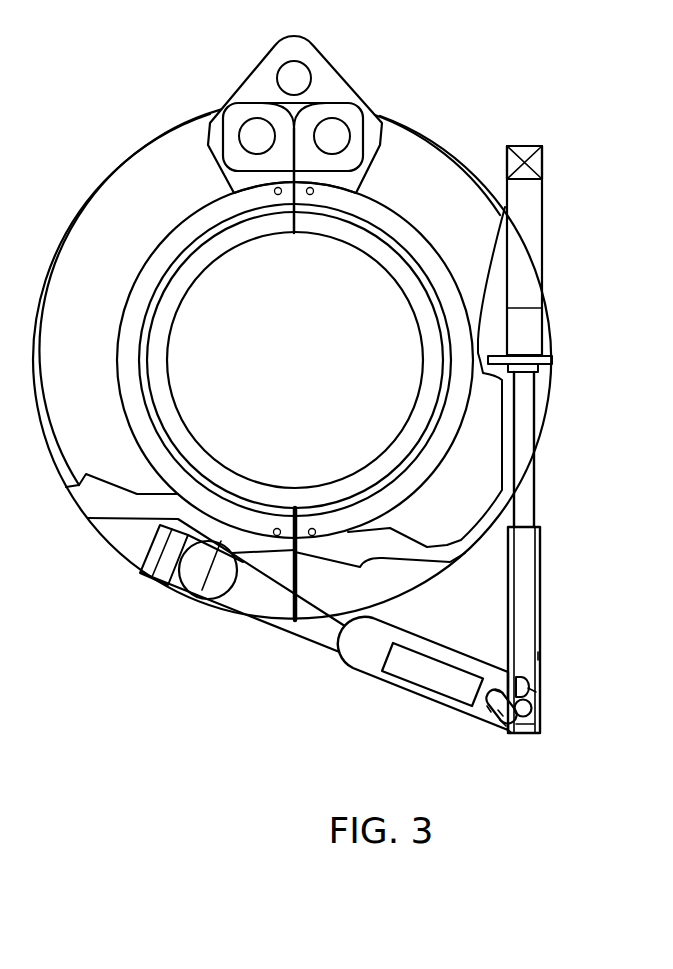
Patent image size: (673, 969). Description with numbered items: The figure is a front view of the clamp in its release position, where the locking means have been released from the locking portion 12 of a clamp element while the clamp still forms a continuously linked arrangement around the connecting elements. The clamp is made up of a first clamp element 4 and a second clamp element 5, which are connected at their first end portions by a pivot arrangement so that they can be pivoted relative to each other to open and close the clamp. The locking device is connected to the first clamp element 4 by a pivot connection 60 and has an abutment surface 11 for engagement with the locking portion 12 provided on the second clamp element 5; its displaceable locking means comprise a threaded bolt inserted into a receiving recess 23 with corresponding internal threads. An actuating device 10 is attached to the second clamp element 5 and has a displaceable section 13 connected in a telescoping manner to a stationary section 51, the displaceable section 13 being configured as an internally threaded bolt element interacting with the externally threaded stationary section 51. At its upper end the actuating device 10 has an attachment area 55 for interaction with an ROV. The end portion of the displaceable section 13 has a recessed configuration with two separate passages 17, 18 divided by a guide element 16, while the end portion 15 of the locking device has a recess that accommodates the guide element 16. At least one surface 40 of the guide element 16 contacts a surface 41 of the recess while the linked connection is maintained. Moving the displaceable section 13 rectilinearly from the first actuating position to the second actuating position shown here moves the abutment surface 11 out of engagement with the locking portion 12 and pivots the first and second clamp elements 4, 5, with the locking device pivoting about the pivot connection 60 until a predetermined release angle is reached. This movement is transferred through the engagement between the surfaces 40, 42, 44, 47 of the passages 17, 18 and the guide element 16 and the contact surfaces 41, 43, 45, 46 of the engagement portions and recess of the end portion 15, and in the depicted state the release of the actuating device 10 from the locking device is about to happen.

The first clamp element 4 is at (143, 190).
The second clamp element 5 is at (433, 182).
The actuating device 10 is at (550, 246).
The abutment surface 11 is at (412, 661).
The locking portion 12 is at (355, 587).
The displaceable section 13 is at (533, 607).
The end portion of the locking device 15 is at (502, 722).
The guide element 16 is at (527, 709).
The first passage 17 is at (535, 685).
The second passage 18 is at (525, 725).
The receiving recess 23 is at (420, 647).
The surface of the guide element 40 is at (533, 690).
The contact surface of the recess 41 is at (493, 698).
The surface of the passages 42 is at (510, 732).
The contact surface of the engagement portion 43 is at (500, 713).
The surface of the passages 44 is at (540, 655).
The contact surface of the engagement portion 45 is at (495, 667).
The contact surface of the recess 46 is at (487, 712).
The surface of the guide element 47 is at (522, 737).
The stationary section 51 is at (537, 492).
The attachment area 55 is at (537, 160).
The pivot connection 60 is at (198, 598).